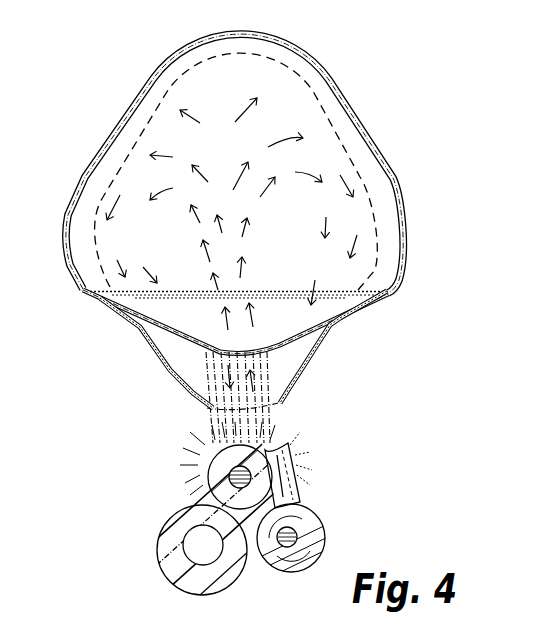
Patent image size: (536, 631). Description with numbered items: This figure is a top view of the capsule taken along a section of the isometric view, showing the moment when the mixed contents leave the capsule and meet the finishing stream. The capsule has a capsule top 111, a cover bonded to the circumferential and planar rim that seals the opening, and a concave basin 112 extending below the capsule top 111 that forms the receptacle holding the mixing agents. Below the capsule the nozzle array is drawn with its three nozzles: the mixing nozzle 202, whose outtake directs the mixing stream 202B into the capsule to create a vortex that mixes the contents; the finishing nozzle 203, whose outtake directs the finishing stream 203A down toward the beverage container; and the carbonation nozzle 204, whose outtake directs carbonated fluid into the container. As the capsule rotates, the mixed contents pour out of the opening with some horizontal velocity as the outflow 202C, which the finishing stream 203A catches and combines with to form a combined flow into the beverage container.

The capsule top 111 is at (335, 140).
The concave basin 112 is at (333, 337).
The mixing nozzle 202 is at (300, 534).
The mixing stream 202B is at (267, 417).
The outflow of mixed contents 202C is at (207, 370).
The finishing nozzle 203 is at (235, 466).
The finishing stream 203A is at (210, 460).
The carbonation nozzle 204 is at (178, 544).